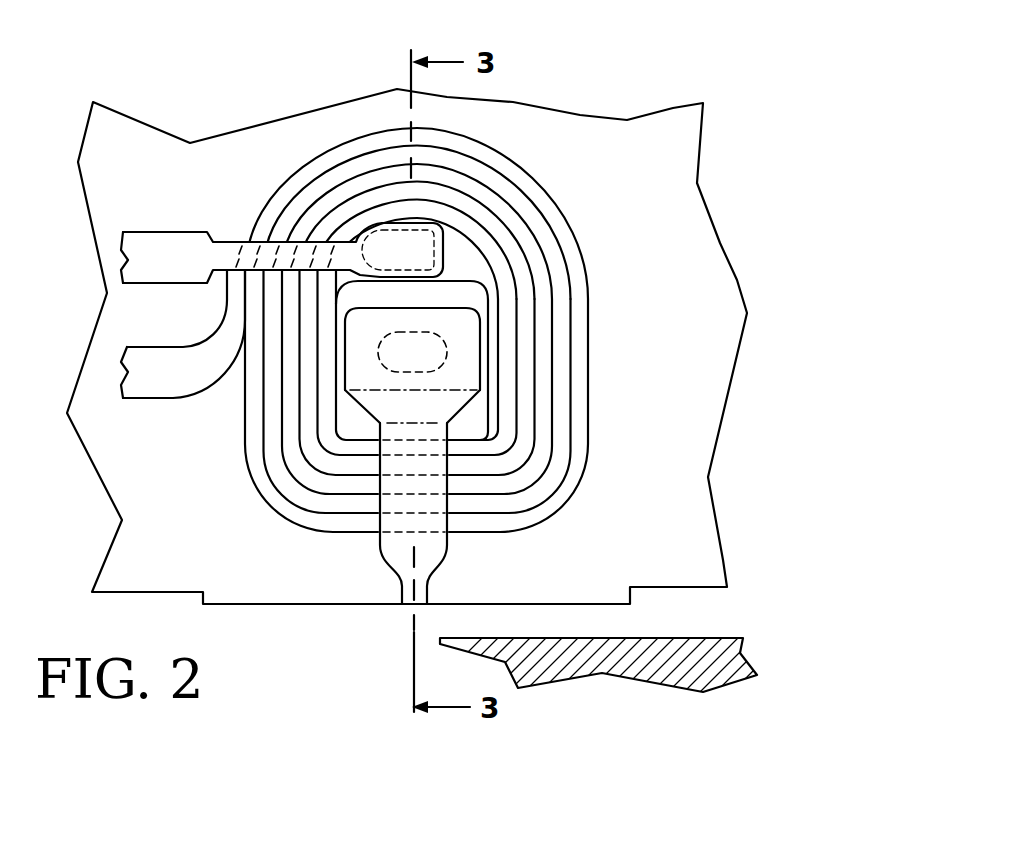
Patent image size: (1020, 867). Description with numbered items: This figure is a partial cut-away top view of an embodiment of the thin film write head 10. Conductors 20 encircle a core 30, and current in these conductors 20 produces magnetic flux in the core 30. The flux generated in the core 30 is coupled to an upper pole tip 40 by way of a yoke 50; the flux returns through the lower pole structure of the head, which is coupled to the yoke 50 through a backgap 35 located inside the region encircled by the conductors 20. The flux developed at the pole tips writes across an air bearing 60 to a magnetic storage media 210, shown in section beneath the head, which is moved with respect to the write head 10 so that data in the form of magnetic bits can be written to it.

The thin film write head 10 is at (565, 176).
The conductors 20 is at (302, 198).
The core 30 is at (460, 362).
The backgap 35 is at (423, 348).
The upper pole tip 40 is at (428, 596).
The yoke 50 is at (400, 557).
The air bearing 60 is at (490, 618).
The magnetic storage media 210 is at (712, 650).